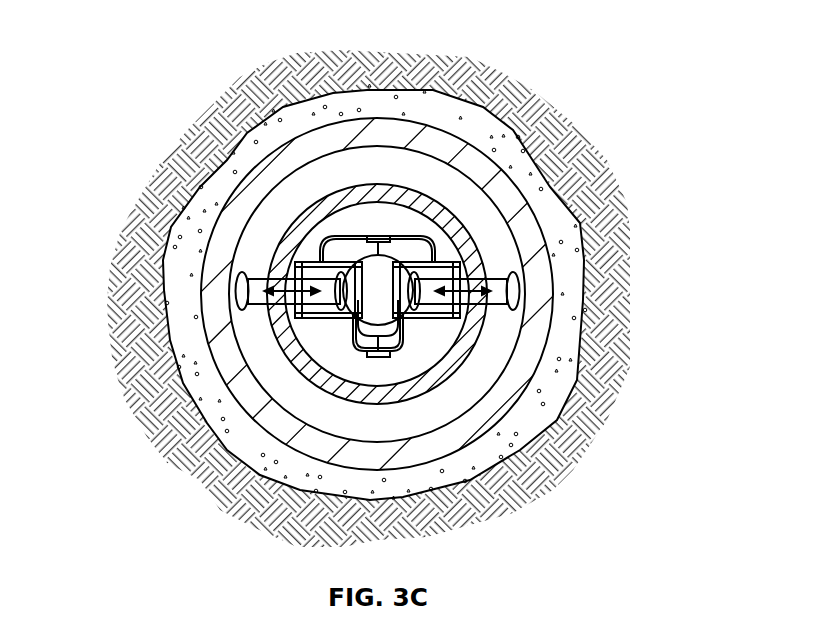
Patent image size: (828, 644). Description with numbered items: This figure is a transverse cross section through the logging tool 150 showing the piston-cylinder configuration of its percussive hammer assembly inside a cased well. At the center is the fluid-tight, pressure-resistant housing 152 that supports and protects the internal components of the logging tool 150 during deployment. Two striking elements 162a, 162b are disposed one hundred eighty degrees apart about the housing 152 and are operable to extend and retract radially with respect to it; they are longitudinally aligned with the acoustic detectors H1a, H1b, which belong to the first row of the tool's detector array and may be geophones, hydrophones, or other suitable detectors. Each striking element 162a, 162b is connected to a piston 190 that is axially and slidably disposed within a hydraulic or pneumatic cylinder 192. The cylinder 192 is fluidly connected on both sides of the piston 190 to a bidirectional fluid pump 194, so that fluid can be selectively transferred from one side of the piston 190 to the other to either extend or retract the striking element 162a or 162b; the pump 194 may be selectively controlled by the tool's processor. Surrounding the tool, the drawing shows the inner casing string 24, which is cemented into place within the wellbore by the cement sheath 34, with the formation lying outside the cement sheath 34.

The inner casing string 24 is at (562, 225).
The cement sheath 34 is at (550, 187).
The logging tool 150 is at (444, 205).
The housing 152 is at (412, 333).
The striking element 162a is at (522, 287).
The striking element 162b is at (236, 287).
The piston 190 is at (378, 243).
The cylinder 192 is at (306, 322).
The bidirectional fluid pump 194 is at (462, 312).
The acoustic detector H1a is at (512, 302).
The acoustic detector H1b is at (245, 302).